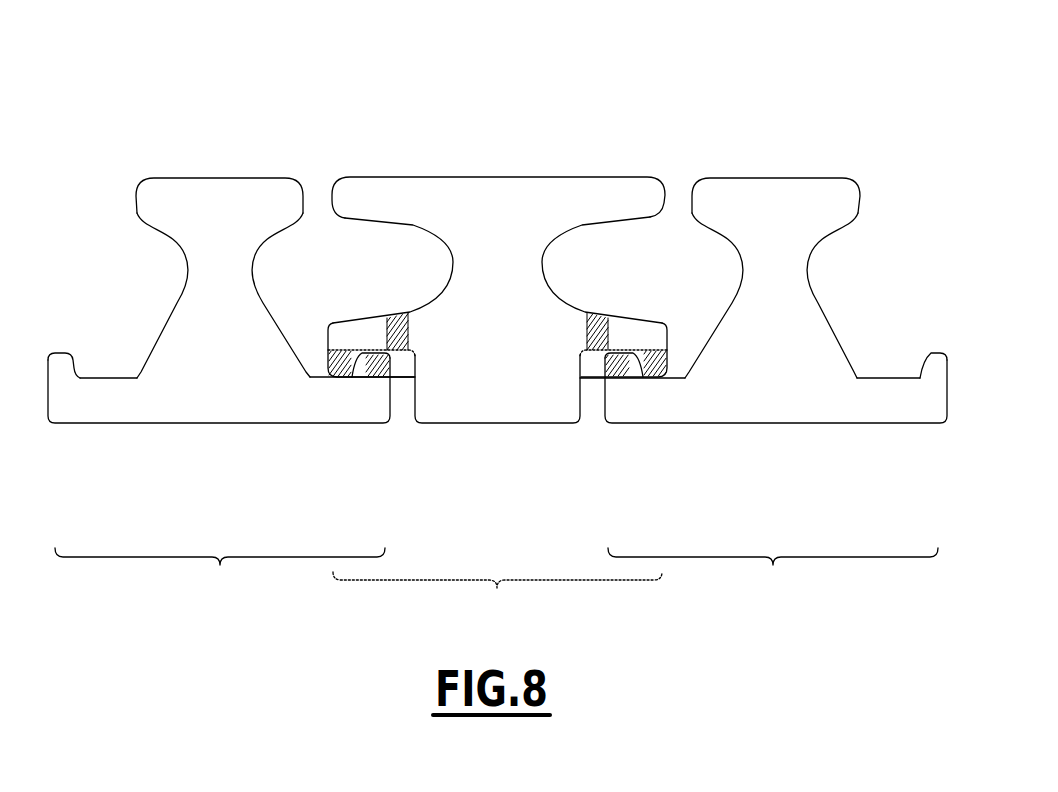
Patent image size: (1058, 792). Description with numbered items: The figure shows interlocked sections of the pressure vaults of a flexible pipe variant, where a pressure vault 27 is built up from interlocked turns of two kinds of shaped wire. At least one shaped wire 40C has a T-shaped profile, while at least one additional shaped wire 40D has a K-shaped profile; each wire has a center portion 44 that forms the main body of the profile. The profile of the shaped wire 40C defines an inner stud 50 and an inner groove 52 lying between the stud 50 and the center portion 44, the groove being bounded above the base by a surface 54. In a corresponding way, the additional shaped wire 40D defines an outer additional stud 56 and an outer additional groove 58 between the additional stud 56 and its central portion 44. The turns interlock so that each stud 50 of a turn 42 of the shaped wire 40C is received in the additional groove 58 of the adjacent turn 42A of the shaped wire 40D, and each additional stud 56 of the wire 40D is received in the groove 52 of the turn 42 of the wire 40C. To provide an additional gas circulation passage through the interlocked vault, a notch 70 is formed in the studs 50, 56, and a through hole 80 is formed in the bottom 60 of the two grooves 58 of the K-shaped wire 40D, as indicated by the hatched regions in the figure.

The panel assembly 27 is at (700, 96).
The center portion 44 is at (215, 327).
The shaped wire 40C is at (213, 398).
The additional shaped wire 40D is at (533, 400).
The turn 42 is at (496, 575).
The adjacent turn 42A is at (497, 599).
The inner stud 50 is at (57, 360).
The inner groove 52 is at (102, 398).
The base top surface 54 is at (115, 373).
The outer additional stud 56 is at (667, 362).
The outer additional groove 58 is at (360, 333).
The bottom 60 is at (380, 340).
The notch 70 is at (337, 365).
The through hole 80 is at (397, 322).